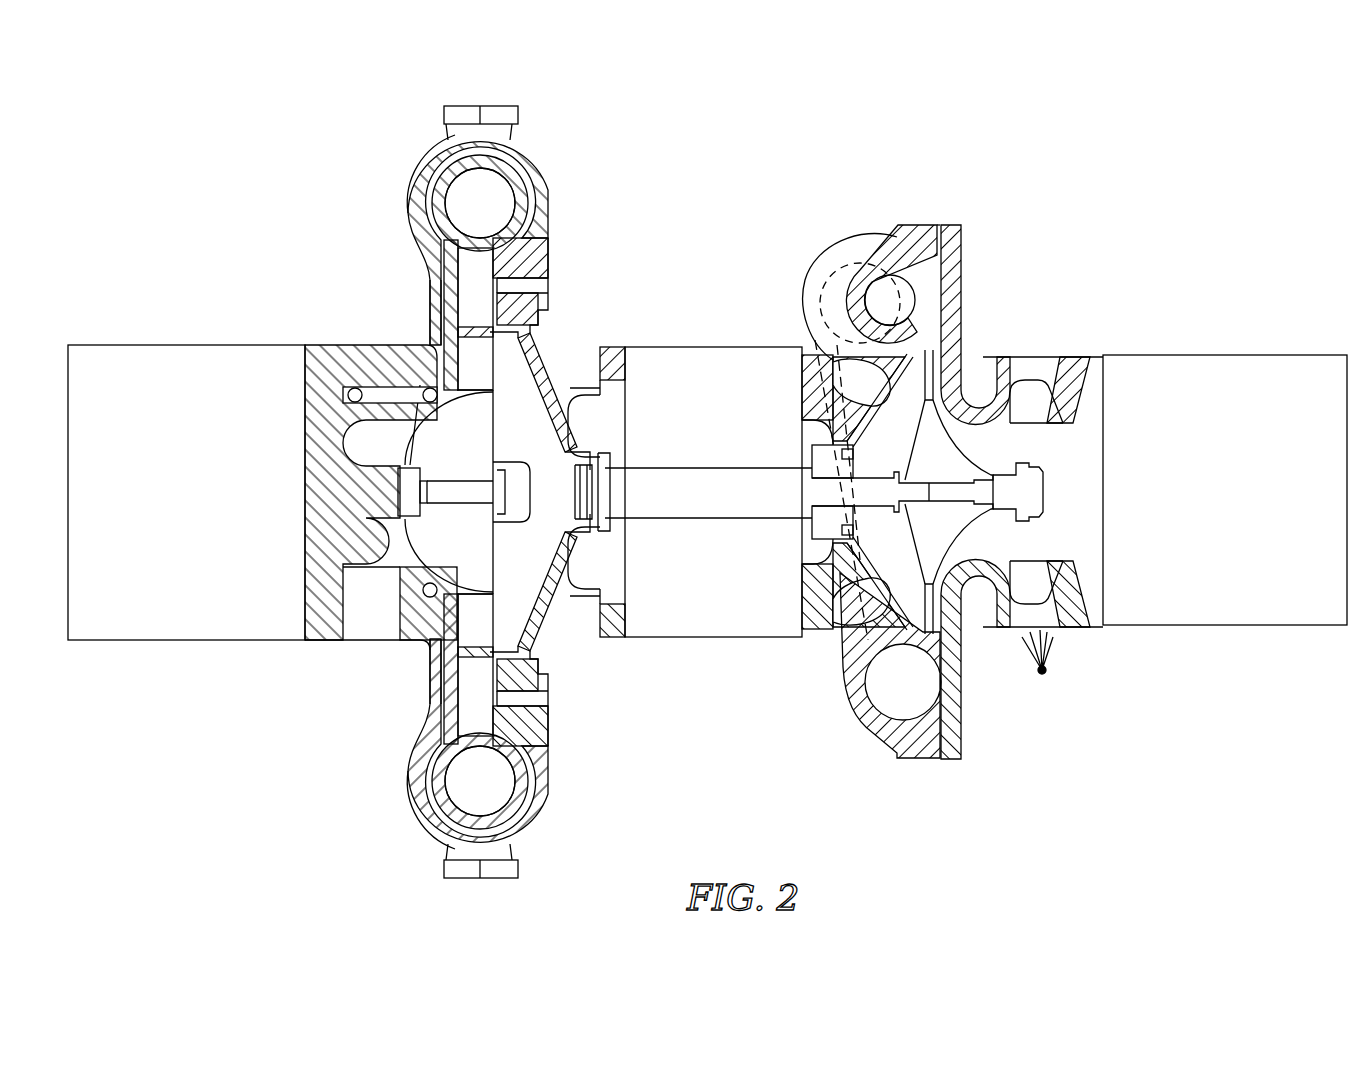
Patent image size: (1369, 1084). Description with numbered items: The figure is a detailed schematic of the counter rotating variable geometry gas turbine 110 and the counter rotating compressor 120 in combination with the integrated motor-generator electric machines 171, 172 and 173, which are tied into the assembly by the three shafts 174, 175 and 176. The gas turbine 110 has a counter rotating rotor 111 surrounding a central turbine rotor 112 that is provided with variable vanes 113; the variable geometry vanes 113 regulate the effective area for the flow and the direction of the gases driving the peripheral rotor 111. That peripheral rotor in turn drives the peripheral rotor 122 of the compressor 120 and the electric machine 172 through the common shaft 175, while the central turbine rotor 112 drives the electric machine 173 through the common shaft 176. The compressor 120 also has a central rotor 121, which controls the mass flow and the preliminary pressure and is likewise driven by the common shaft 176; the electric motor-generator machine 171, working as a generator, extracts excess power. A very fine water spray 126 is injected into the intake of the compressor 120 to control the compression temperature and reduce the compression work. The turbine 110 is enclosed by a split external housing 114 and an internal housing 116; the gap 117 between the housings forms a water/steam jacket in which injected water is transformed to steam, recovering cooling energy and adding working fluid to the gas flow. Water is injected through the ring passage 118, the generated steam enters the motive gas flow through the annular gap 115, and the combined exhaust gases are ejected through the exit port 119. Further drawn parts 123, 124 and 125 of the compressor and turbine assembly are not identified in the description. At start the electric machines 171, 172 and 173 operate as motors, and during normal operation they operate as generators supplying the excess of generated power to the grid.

The counter rotating variable geometry gas turbine 110 is at (527, 152).
The counter rotating rotor 111 is at (512, 373).
The central turbine rotor 112 is at (445, 423).
The variable vanes 113 is at (467, 282).
The split external housing 114 is at (437, 157).
The annular gap 115 is at (513, 253).
The internal housing 116 is at (447, 170).
The gap 117 is at (533, 190).
The ring passage 118 is at (335, 378).
The exit port 119 is at (367, 630).
The counter rotating compressor 120 is at (847, 237).
The central rotor 121 is at (957, 550).
The peripheral rotor 122 is at (843, 637).
The turbine volute lower section 123 is at (875, 723).
The heat shield flange 124 is at (847, 580).
The exhaust outlet 125 is at (1053, 628).
The water spray 126 is at (1045, 674).
The electric motor-generator machine 171 is at (1253, 355).
The electric machine 172 is at (698, 345).
The electric motor 173 is at (150, 343).
The shaft 174 is at (1035, 485).
The common shaft 175 is at (672, 518).
The common shaft 176 is at (405, 468).